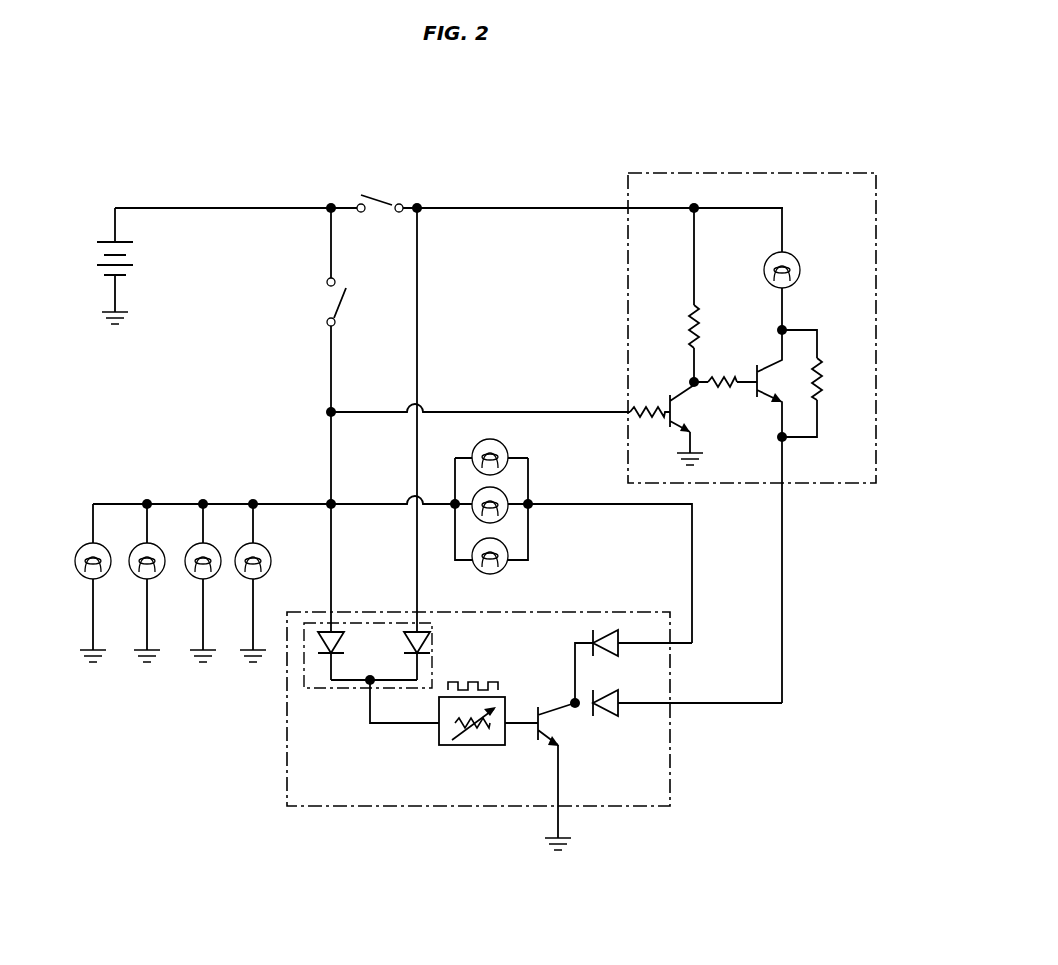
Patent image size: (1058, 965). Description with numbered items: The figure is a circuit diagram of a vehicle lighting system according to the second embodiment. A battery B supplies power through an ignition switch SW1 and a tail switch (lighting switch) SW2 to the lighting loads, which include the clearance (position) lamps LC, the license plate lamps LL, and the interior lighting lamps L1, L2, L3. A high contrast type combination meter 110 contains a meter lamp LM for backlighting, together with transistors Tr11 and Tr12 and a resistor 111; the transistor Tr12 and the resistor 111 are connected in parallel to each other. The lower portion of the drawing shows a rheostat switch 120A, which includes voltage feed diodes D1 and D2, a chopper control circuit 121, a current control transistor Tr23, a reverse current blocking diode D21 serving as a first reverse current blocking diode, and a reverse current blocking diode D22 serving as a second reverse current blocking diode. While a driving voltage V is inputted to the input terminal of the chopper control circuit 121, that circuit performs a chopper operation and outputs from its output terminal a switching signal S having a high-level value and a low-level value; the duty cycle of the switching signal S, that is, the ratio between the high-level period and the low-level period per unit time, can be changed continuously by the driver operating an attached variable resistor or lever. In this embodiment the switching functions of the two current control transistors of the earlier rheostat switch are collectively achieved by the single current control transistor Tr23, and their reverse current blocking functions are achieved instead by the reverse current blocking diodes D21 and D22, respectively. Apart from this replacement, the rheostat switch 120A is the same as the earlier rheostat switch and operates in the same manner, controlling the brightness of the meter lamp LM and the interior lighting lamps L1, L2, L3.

The battery B is at (98, 254).
The ignition switch SW1 is at (383, 190).
The tail switch SW2 is at (323, 297).
The combination meter 110 is at (727, 172).
The meter lamp LM is at (802, 270).
The resistor 111 is at (830, 377).
The transistor Tr11 is at (668, 406).
The transistor Tr12 is at (758, 392).
The interior lighting lamp L1 is at (490, 440).
The interior lighting lamp L2 is at (510, 493).
The interior lighting lamp L3 is at (510, 545).
The clearance lamps LC is at (97, 580).
The license plate lamps LL is at (207, 580).
The voltage feed diode D1 is at (428, 642).
The voltage feed diode D2 is at (322, 630).
The rheostat switch 120A is at (590, 808).
The chopper control circuit 121 is at (458, 748).
The driving voltage V is at (385, 725).
The switching signal S is at (518, 720).
The current control transistor Tr23 is at (565, 727).
The reverse current blocking diode D21 is at (625, 712).
The reverse current blocking diode D22 is at (625, 655).